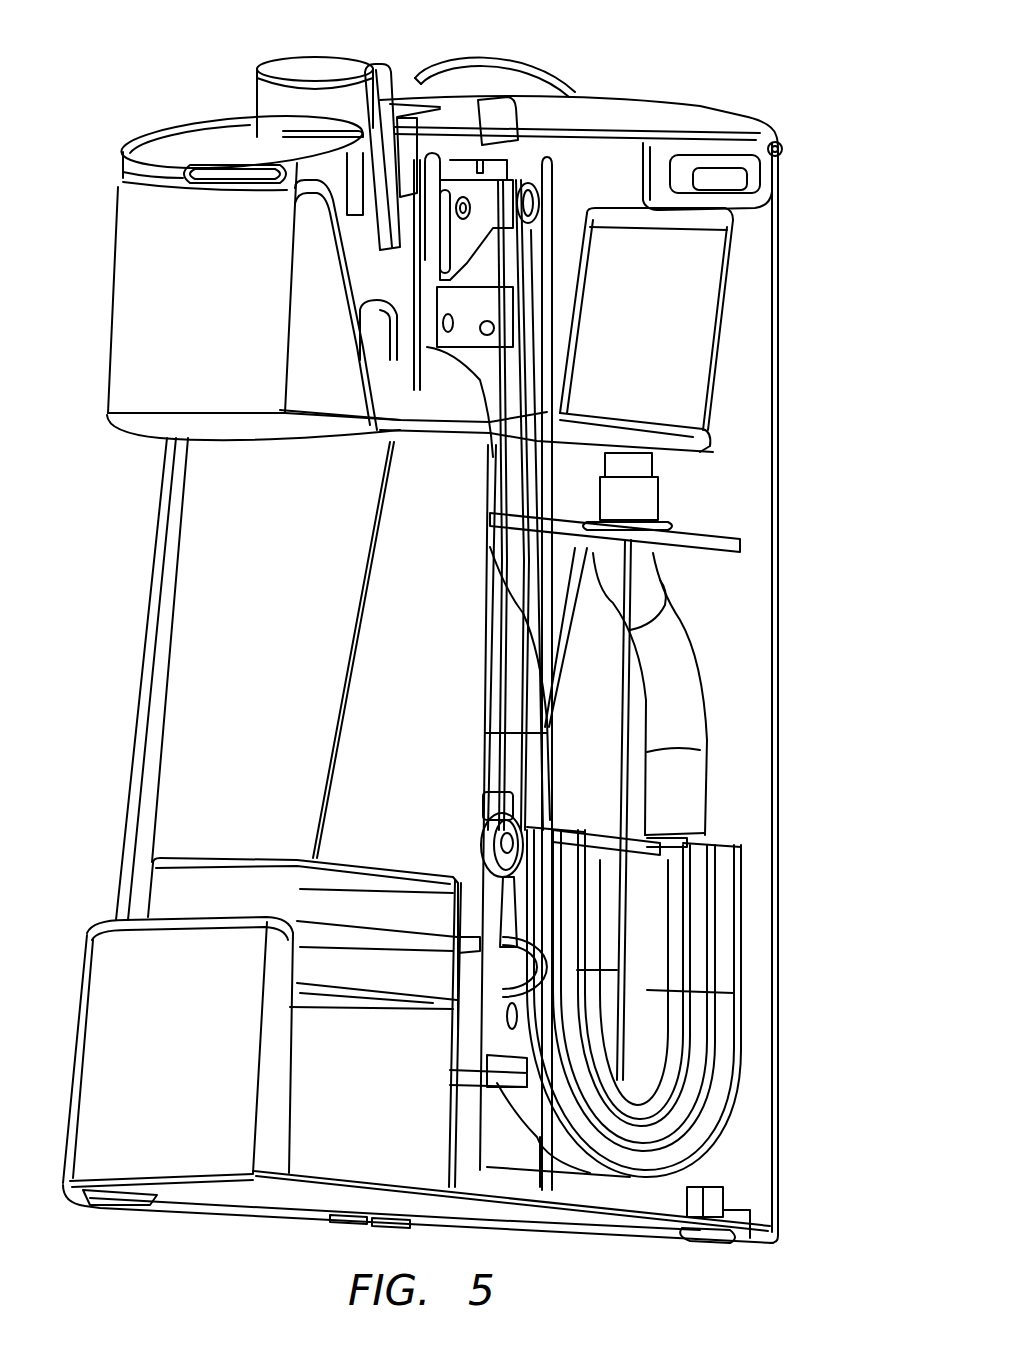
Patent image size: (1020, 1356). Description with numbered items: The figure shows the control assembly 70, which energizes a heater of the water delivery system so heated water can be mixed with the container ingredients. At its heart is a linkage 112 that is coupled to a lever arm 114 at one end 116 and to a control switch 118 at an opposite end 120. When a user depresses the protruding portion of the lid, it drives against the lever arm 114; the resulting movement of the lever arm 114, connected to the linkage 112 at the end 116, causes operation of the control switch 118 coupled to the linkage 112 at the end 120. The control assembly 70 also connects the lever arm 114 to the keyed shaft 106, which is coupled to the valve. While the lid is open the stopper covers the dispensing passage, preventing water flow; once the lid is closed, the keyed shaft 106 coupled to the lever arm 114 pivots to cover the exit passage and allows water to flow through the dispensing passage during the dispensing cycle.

The control assembly 70 is at (579, 121).
The keyed shaft 106 is at (463, 197).
The linkage 112 is at (530, 258).
The lever arm 114 is at (488, 203).
The end 116 is at (530, 200).
The control switch 118 is at (587, 798).
The end 120 is at (480, 800).